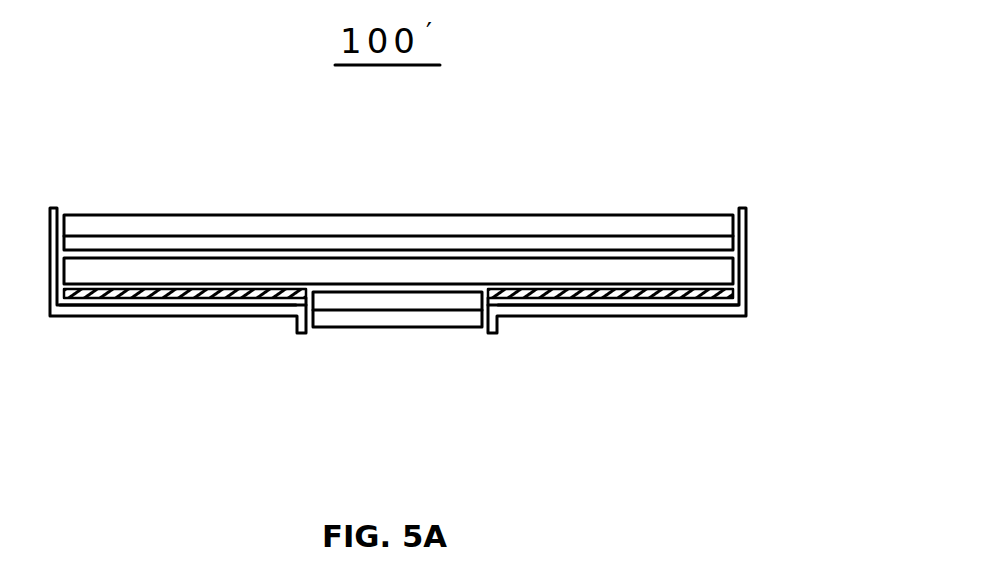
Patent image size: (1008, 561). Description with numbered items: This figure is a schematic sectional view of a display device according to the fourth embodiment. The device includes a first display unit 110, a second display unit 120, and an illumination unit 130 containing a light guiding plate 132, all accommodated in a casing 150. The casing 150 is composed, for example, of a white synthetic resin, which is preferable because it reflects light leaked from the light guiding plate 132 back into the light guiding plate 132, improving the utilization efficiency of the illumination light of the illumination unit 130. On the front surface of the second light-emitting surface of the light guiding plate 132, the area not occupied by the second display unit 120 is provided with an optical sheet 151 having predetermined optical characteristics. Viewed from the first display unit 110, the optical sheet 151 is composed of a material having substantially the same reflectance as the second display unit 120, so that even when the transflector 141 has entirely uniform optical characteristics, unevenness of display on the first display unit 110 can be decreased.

The first display unit 110 is at (530, 215).
The second display unit 120 is at (345, 330).
The illumination unit 130 is at (161, 258).
The light guiding plate 132 is at (292, 268).
The transflector 141 is at (665, 288).
The casing 150 is at (746, 272).
The optical sheet 151 is at (613, 302).